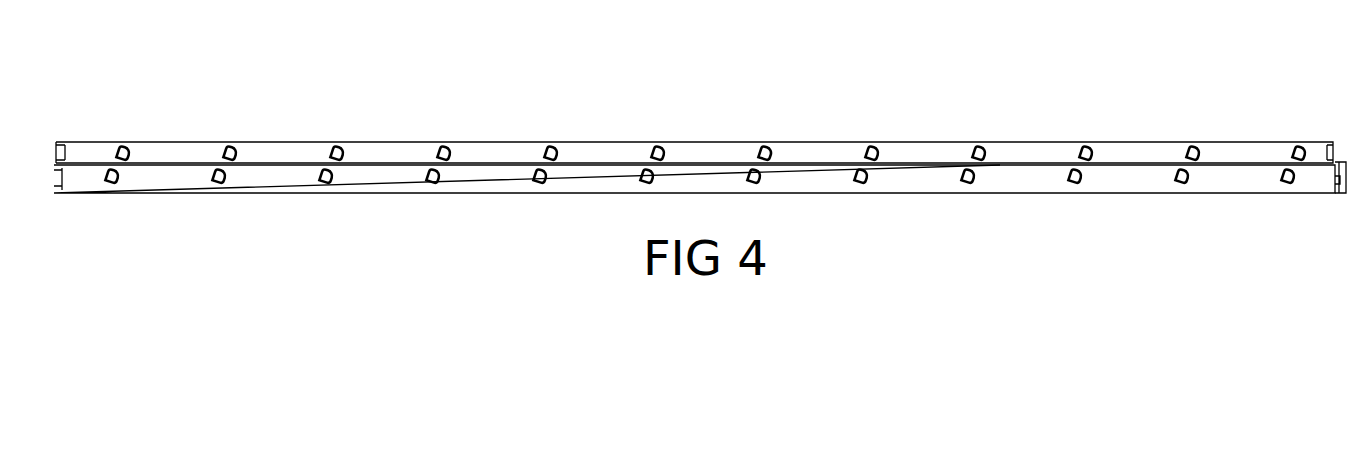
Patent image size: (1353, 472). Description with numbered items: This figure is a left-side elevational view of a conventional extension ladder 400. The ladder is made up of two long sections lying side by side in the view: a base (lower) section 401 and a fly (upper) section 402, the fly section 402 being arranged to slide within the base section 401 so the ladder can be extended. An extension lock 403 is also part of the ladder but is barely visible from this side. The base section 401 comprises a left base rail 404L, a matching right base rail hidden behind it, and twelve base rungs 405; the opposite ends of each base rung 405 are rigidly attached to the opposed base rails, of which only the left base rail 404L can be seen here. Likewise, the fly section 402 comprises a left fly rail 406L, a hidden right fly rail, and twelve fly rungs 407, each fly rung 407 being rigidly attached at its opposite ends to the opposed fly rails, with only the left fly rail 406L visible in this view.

The extension ladder 400 is at (287, 110).
The base section 401 is at (482, 193).
The fly section 402 is at (482, 141).
The extension lock 403 is at (1083, 142).
The left base rail 404L is at (920, 178).
The base rungs 405 is at (1075, 194).
The left fly rail 406L is at (712, 153).
The fly rungs 407 is at (870, 141).